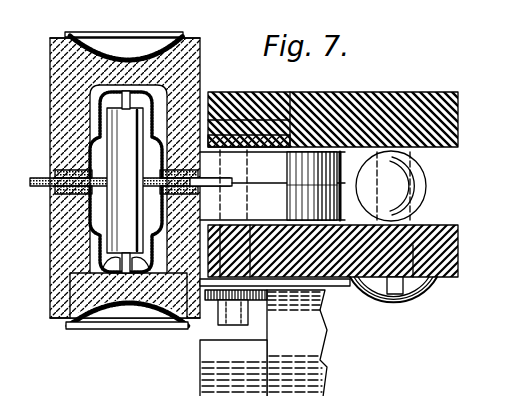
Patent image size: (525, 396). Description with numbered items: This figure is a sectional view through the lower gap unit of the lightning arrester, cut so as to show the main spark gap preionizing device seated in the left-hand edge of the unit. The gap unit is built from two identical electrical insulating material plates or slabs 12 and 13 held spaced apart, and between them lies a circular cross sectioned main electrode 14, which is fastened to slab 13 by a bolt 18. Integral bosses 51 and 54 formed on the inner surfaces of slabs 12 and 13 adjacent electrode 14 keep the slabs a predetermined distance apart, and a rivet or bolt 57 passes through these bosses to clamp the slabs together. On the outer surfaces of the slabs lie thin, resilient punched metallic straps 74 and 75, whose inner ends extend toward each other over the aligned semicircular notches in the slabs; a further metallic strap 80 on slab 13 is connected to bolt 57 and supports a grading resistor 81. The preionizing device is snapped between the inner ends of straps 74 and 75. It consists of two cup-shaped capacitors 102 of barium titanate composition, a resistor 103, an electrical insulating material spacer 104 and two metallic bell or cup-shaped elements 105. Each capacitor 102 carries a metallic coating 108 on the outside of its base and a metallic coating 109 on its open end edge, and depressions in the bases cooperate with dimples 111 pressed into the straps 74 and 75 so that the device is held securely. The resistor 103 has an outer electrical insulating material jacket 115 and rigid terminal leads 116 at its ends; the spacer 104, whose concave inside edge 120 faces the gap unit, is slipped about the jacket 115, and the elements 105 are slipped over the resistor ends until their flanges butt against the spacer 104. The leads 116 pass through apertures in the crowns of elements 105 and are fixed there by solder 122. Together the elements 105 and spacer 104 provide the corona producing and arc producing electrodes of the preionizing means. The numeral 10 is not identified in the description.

The frame 10 is at (517, 196).
The electrical insulating material plate 12 is at (404, 92).
The electrical insulating material plate 13 is at (465, 268).
The main electrode 14 is at (444, 189).
The bolt 18 is at (436, 299).
The boss 51 is at (280, 186).
The boss 54 is at (298, 197).
The rivet or bolt 57 is at (262, 302).
The metallic strap 74 is at (56, 31).
The metallic strap 75 is at (157, 331).
The metallic strap 80 is at (233, 368).
The grading resistor 81 is at (297, 343).
The capacitor 102 is at (45, 118).
The resistor 103 is at (125, 180).
The electrical insulating material spacer 104 is at (42, 180).
The metallic bell or cup-shaped element 105 is at (100, 241).
The metallic coating 108 is at (200, 40).
The metallic coating 109 is at (67, 173).
The dimple 111 is at (141, 34).
The electrical insulating material jacket 115 is at (120, 128).
The terminal wire or lead 116 is at (112, 262).
The back or inside edge 120 is at (207, 182).
The solder 122 is at (121, 96).